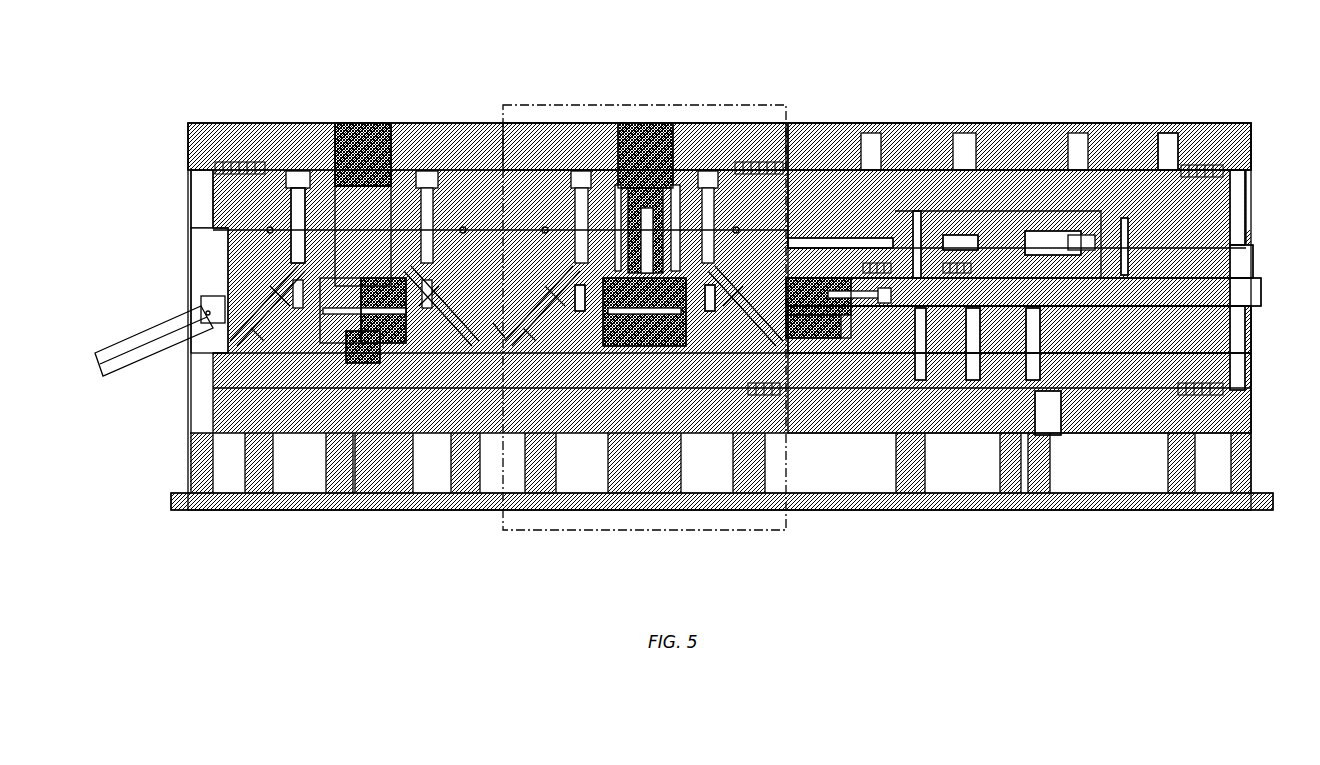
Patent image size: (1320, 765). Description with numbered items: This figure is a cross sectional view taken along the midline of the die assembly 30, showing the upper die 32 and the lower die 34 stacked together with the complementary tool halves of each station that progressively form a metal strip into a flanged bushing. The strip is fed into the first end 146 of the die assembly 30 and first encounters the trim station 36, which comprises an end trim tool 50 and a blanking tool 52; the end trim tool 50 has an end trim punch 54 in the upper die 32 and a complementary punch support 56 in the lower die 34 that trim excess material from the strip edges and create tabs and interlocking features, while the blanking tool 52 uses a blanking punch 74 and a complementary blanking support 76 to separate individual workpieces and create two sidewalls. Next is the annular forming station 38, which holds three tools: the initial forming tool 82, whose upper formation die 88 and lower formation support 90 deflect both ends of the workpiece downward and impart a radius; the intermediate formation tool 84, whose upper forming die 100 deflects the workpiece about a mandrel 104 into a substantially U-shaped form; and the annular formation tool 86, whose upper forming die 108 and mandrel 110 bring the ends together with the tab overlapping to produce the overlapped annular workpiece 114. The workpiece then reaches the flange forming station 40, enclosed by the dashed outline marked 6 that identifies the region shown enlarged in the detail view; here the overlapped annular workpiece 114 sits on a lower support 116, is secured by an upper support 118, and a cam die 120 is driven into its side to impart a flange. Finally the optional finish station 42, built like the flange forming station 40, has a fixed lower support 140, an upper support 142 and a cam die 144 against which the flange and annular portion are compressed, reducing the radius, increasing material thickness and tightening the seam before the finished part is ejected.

The detail view location 6 is at (620, 97).
The die assembly 30 is at (1225, 80).
The upper die 32 is at (1245, 182).
The lower die 34 is at (1245, 370).
The trim station 36 is at (1193, 113).
The annular forming station 38 is at (863, 113).
The flange forming station 40 is at (672, 113).
The finish station 42 is at (383, 113).
The end trim tool 50 is at (1190, 350).
The blanking tool 52 is at (1103, 350).
The end trim punch 54 is at (1162, 205).
The punch support 56 is at (1183, 283).
The blanking punch 74 is at (1138, 250).
The blanking support 76 is at (1147, 300).
The initial forming tool 82 is at (997, 335).
The intermediate formation tool 84 is at (937, 332).
The annular formation tool 86 is at (853, 332).
The upper formation die 88 is at (1043, 223).
The lower formation support 90 is at (1050, 350).
The upper forming die 100 is at (946, 220).
The mandrel 104 is at (903, 205).
The upper forming die 108 is at (828, 225).
The mandrel 110 is at (796, 205).
The overlapped annular workpiece 114 is at (413, 360).
The lower support 116 is at (640, 345).
The upper support 118 is at (603, 122).
The cam die 120 is at (578, 350).
The fixed lower support 140 is at (352, 340).
The upper support 142 is at (322, 160).
The cam die 144 is at (300, 350).
The first end 146 is at (1243, 490).